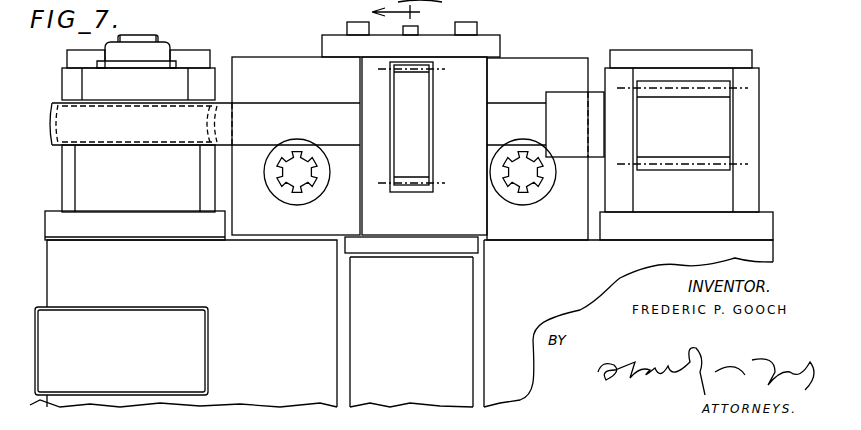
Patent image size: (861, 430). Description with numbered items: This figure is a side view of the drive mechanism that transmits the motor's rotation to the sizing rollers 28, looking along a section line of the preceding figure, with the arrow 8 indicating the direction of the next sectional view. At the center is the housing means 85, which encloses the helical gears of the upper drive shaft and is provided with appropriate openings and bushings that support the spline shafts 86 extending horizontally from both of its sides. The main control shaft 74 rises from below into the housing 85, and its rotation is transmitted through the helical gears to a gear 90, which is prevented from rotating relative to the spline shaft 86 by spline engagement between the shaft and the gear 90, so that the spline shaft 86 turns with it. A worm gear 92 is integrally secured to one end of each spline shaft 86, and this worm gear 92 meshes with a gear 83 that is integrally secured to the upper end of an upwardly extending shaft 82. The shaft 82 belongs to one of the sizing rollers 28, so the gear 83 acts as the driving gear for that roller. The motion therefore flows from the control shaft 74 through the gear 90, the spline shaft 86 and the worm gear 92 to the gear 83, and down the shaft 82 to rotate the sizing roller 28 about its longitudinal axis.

The section line 8 is at (385, 11).
The sizing roller 28 is at (138, 358).
The shaft 74 is at (473, 310).
The upwardly extending shaft 82 is at (152, 186).
The gear 83 is at (55, 140).
The housing means 85 is at (288, 60).
The spline shaft 86 is at (302, 103).
The gear 90 is at (425, 140).
The worm gear 92 is at (683, 80).